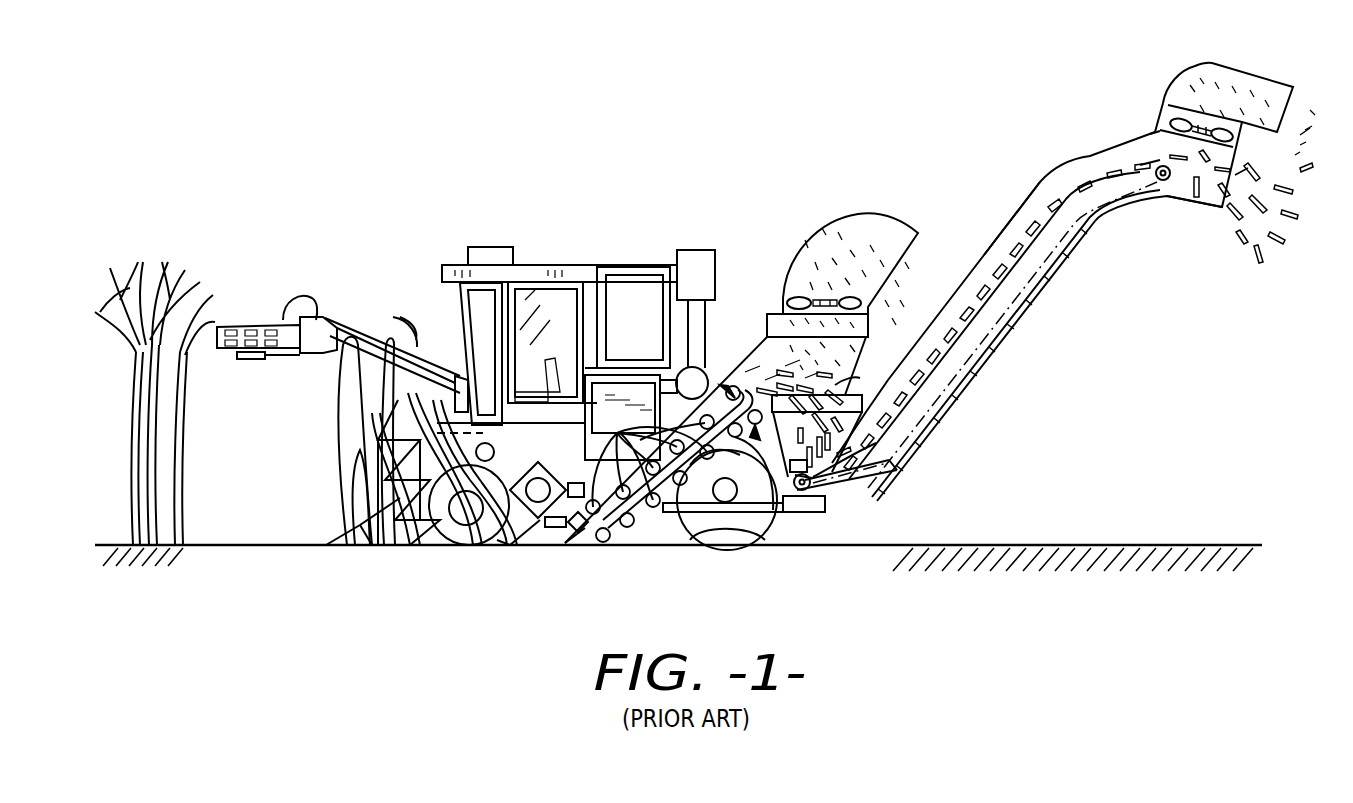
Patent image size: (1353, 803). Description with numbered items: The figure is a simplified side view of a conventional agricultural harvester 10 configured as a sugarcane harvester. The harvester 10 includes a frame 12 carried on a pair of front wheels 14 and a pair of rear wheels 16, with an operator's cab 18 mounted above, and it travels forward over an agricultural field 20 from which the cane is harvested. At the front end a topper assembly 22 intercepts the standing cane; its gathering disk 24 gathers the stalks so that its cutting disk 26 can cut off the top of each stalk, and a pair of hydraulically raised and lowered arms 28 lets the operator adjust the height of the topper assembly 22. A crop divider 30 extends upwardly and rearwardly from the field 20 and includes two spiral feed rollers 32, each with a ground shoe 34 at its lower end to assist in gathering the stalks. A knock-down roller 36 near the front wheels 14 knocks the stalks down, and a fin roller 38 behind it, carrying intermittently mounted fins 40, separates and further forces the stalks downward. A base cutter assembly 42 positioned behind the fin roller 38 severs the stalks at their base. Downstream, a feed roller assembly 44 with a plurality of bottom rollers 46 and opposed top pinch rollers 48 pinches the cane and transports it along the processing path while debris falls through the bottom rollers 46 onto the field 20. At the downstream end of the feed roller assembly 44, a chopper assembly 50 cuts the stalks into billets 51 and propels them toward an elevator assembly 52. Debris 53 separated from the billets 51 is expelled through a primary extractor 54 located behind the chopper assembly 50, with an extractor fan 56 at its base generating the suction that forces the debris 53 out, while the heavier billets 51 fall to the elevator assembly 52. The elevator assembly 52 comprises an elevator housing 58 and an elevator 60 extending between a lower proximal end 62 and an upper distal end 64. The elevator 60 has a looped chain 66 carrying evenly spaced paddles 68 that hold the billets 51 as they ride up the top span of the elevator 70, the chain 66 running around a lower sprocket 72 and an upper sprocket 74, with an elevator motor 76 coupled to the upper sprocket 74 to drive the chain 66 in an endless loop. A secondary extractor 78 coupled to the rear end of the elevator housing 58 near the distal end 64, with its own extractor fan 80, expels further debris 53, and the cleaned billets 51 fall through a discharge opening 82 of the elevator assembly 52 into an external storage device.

The agricultural harvester 10 is at (402, 157).
The frame 12 is at (547, 469).
The front wheels 14 is at (467, 535).
The rear wheels 16 is at (748, 535).
The operator's cab 18 is at (566, 268).
The agricultural field 20 is at (247, 555).
The topper assembly 22 is at (300, 297).
The gathering disk 24 is at (233, 326).
The cutting disk 26 is at (250, 362).
The arms 28 is at (410, 355).
The crop divider 30 is at (355, 514).
The spiral feed rollers 32 is at (372, 548).
The ground shoe 34 is at (345, 548).
The knock-down roller 36 is at (494, 452).
The fin roller 38 is at (538, 543).
The fins 40 is at (518, 540).
The base cutter assembly 42 is at (573, 548).
The feed roller assembly 44 is at (651, 520).
The bottom rollers 46 is at (784, 500).
The top pinch rollers 48 is at (646, 441).
The chopper assembly 50 is at (750, 378).
The billets 51 is at (840, 388).
The elevator assembly 52 is at (997, 368).
The debris 53 is at (868, 222).
The primary extractor 54 is at (790, 226).
The extractor fan 56 is at (783, 282).
The elevator housing 58 is at (1036, 352).
The elevator 60 is at (1015, 265).
The proximal end 62 is at (857, 488).
The distal end 64 is at (1152, 140).
The chain 66 is at (1065, 305).
The paddles 68 is at (1060, 226).
The top span of the elevator 70 is at (975, 300).
The lower sprocket 72 is at (815, 505).
The upper sprocket 74 is at (1150, 172).
The elevator motor 76 is at (1145, 172).
The secondary extractor 78 is at (1212, 70).
The extractor fan 80 is at (1185, 108).
The discharge opening 82 is at (1184, 200).